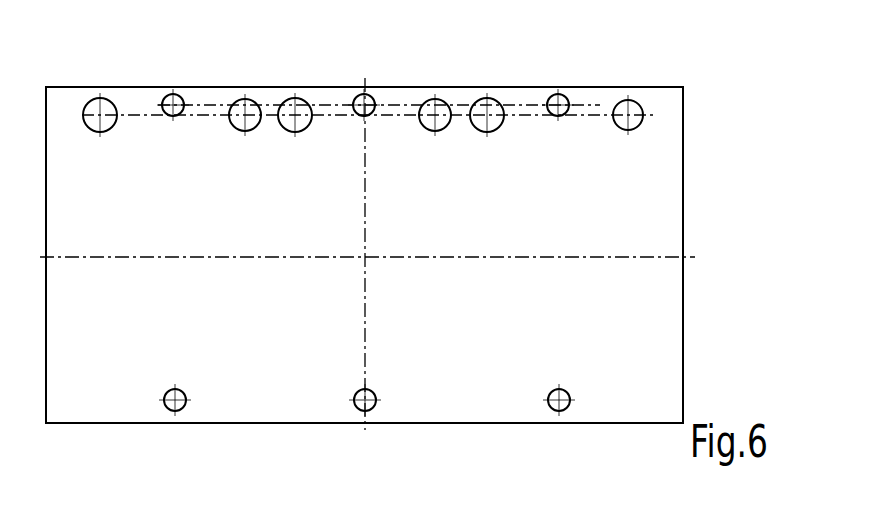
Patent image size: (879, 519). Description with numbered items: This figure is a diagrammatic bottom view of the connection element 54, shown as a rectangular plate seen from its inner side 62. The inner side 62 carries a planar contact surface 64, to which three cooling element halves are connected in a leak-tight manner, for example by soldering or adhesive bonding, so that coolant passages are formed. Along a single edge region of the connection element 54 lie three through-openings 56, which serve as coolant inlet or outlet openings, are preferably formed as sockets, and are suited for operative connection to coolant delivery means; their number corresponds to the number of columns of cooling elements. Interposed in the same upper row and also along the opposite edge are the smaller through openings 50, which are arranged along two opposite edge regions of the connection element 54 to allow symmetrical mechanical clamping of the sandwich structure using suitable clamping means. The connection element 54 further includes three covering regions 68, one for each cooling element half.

The through openings 50 is at (177, 100).
The connection element 54 is at (698, 103).
The through-openings 56 is at (242, 110).
The inner side 62 is at (598, 227).
The planar contact surface 64 is at (295, 332).
The covering regions 68 is at (92, 107).